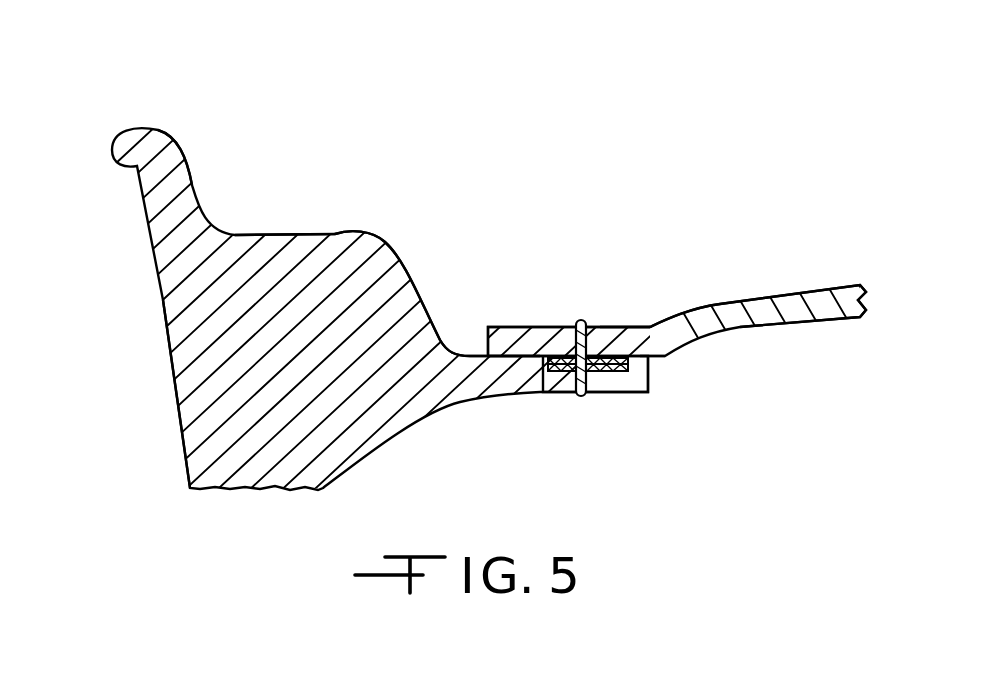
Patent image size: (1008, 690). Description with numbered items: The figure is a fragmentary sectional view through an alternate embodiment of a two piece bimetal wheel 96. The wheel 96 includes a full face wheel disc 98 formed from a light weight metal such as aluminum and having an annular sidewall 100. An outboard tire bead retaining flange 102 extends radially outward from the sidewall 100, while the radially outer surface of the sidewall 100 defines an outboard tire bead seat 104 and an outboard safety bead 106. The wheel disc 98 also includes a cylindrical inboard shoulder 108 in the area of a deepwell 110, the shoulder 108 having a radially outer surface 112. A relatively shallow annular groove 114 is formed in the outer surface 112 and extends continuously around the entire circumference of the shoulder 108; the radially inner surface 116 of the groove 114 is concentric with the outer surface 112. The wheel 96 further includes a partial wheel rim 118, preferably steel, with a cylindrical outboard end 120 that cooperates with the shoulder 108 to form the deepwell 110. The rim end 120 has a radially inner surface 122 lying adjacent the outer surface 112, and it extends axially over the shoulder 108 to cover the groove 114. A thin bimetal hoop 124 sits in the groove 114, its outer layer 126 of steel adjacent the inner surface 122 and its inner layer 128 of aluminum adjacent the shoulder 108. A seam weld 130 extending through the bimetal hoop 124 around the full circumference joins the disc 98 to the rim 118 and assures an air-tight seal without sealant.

The two piece bimetal wheel 96 is at (316, 60).
The full face wheel disc 98 is at (183, 325).
The annular sidewall 100 is at (183, 408).
The outboard tire bead retaining flange 102 is at (188, 192).
The outboard tire bead seat 104 is at (267, 236).
The outboard safety bead 106 is at (366, 232).
The cylindrical inboard shoulder 108 is at (497, 378).
The deepwell 110 is at (534, 226).
The radially outer surface 112 is at (476, 352).
The annular groove 114 is at (542, 392).
The radially inner surface 116 is at (549, 380).
The partial wheel rim 118 is at (753, 295).
The cylindrical outboard end 120 is at (625, 327).
The radially inner surface 122 is at (650, 358).
The bimetal hoop 124 is at (598, 380).
The outer layer 126 is at (648, 392).
The inner layer 128 is at (630, 395).
The seam weld 130 is at (581, 320).